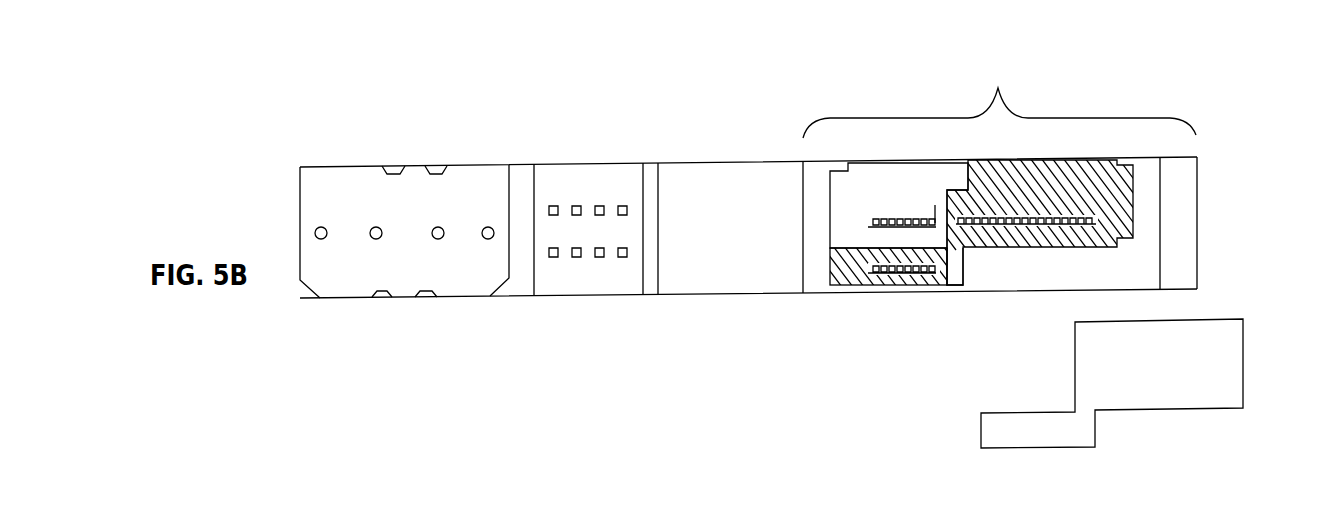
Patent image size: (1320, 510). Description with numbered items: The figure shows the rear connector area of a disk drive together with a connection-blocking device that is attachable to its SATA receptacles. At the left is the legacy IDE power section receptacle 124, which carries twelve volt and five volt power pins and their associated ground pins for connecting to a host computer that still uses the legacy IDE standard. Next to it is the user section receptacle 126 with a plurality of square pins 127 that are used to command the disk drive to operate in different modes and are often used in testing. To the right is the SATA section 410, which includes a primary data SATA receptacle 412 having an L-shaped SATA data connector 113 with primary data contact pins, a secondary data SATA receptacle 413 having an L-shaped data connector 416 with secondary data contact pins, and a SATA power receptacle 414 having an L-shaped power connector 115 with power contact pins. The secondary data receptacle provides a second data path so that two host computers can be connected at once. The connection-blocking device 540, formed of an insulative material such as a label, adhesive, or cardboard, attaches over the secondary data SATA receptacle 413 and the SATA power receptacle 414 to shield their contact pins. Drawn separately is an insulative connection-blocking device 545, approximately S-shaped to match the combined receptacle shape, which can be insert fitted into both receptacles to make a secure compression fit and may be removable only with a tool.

The legacy IDE power section receptacle 124 is at (445, 280).
The user section receptacle 126 is at (590, 279).
The square pins 127 is at (551, 203).
The SATA section 410 is at (1012, 82).
The primary data SATA receptacle 412 is at (837, 173).
The secondary data SATA receptacle 413 is at (873, 283).
The SATA power receptacle 414 is at (1037, 204).
The connection-blocking device 540 is at (1040, 164).
The L-shaped power connector 115 is at (956, 213).
The L-shaped SATA data connector 113 is at (938, 221).
The L-shaped data connector 416 is at (963, 268).
The insulative connection-blocking device 545 is at (1230, 367).